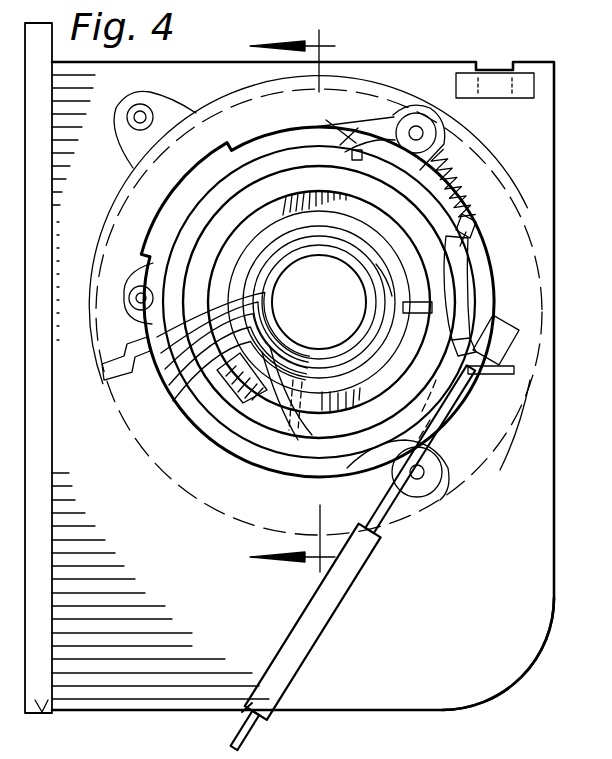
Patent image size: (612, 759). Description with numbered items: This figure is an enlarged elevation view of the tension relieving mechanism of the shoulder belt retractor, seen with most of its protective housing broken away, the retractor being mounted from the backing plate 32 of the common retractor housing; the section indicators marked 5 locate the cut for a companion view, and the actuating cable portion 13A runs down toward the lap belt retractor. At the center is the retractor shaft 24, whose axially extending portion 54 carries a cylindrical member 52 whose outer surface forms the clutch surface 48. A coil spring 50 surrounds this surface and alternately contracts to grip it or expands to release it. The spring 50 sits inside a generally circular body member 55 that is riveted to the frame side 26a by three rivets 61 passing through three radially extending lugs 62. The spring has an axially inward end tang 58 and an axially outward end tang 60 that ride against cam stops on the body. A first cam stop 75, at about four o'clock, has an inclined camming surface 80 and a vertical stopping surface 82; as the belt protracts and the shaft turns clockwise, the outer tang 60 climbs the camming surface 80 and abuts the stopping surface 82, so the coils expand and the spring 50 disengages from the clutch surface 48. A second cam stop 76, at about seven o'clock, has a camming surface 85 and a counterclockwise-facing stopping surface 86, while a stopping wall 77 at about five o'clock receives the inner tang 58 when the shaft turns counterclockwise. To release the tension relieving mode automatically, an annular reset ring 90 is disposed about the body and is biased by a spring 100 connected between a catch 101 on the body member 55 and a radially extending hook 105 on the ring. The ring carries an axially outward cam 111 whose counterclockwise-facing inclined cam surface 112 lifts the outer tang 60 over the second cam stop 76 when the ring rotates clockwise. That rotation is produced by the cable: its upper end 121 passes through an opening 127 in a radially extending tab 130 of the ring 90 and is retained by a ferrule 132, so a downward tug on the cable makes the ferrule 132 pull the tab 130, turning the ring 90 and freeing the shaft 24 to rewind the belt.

The section line 5- 5 is at (292, 301).
The actuating lever 13A is at (340, 598).
The retractor shaft 24 is at (320, 295).
The frame side 26a is at (507, 637).
The backing plate 32 is at (50, 712).
The clutch surface 48 is at (298, 302).
The coil spring 50 is at (172, 374).
The cylindrical member 52 is at (180, 388).
The axially extending portion 54 is at (320, 322).
The body member 55 is at (470, 285).
The inner end tang 58 is at (296, 440).
The outer end tang 60 is at (205, 376).
The rivets 61 is at (146, 110).
The lugs 62 is at (152, 264).
The first cam stop 75 is at (456, 322).
The second cam stop 76 is at (270, 445).
The stopping wall 77 is at (436, 430).
The inclined camming surface 80 is at (403, 313).
The stopping surface 82 is at (440, 340).
The camming surface 85 is at (268, 430).
The stopping surface 86 is at (198, 392).
The reset ring 90 is at (212, 237).
The spring 100 is at (455, 178).
The catch 101 is at (345, 150).
The hook 105 is at (478, 225).
The cam 111 is at (248, 422).
The inclined cam surface 112 is at (225, 400).
The upper end of cable 121 is at (446, 400).
The opening 127 is at (512, 430).
The tab 130 is at (514, 370).
The ferrule 132 is at (512, 346).